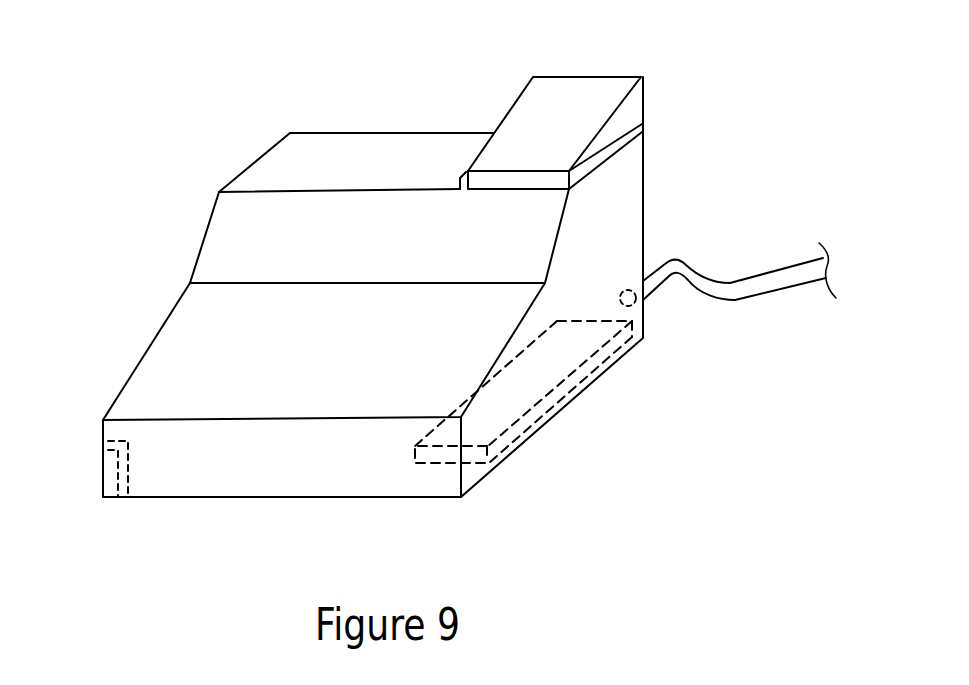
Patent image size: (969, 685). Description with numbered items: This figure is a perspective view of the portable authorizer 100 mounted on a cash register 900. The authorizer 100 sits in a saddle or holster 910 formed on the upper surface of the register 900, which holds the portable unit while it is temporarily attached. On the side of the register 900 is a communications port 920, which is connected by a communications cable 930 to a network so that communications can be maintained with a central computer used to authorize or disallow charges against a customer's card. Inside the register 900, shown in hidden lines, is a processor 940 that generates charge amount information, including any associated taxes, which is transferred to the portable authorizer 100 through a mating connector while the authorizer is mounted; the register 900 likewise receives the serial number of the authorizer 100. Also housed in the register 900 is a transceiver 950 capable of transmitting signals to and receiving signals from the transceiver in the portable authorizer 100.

The portable authorizer 100 is at (444, 261).
The cash register 900 is at (444, 287).
The saddle or holster 910 is at (643, 127).
The communications port 920 is at (643, 300).
The communications cable 930 is at (793, 288).
The processor 940 is at (563, 383).
The transceiver 950 is at (103, 468).